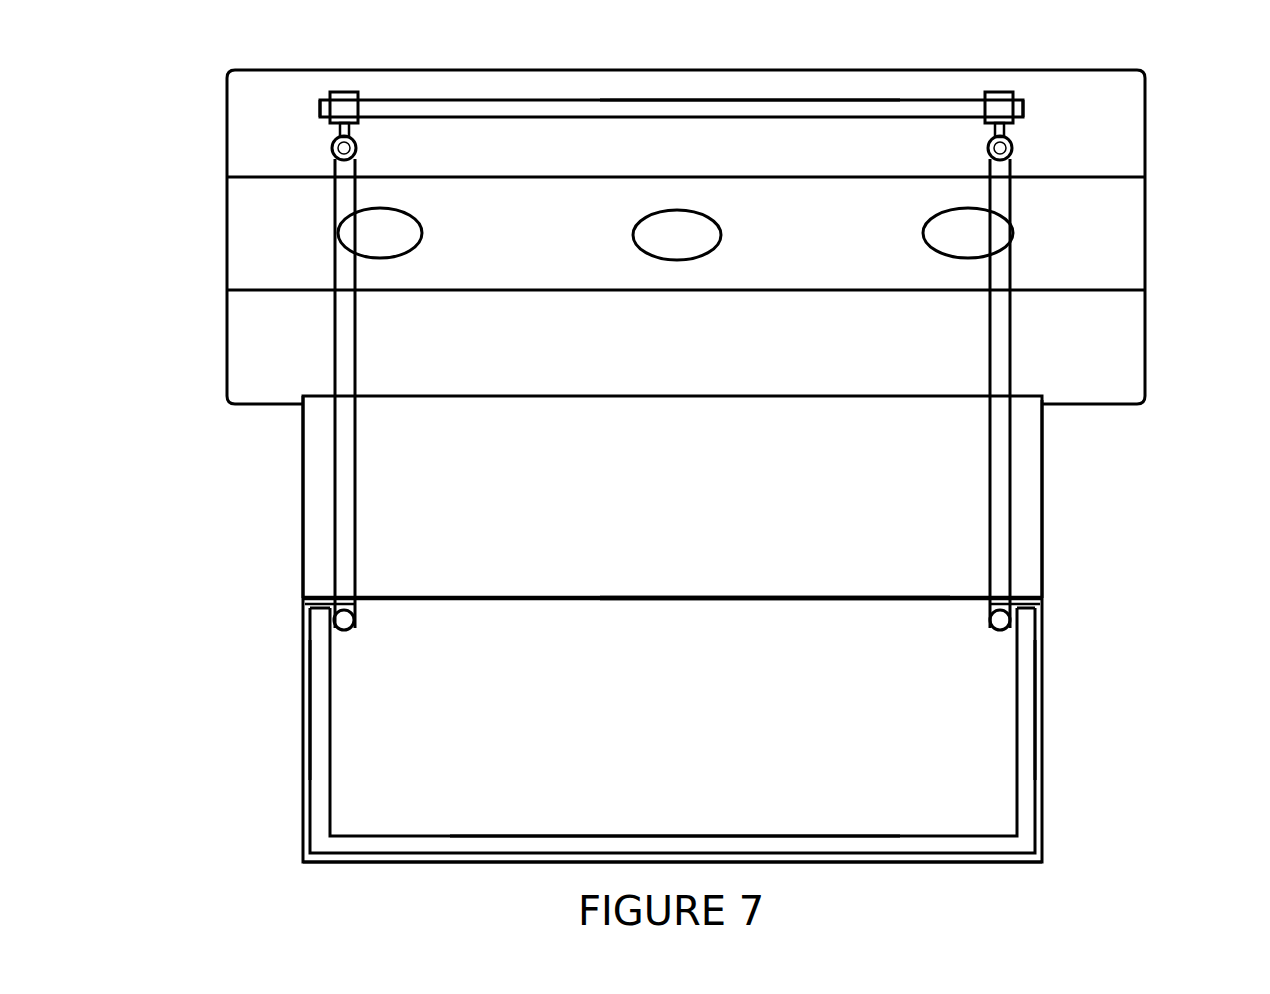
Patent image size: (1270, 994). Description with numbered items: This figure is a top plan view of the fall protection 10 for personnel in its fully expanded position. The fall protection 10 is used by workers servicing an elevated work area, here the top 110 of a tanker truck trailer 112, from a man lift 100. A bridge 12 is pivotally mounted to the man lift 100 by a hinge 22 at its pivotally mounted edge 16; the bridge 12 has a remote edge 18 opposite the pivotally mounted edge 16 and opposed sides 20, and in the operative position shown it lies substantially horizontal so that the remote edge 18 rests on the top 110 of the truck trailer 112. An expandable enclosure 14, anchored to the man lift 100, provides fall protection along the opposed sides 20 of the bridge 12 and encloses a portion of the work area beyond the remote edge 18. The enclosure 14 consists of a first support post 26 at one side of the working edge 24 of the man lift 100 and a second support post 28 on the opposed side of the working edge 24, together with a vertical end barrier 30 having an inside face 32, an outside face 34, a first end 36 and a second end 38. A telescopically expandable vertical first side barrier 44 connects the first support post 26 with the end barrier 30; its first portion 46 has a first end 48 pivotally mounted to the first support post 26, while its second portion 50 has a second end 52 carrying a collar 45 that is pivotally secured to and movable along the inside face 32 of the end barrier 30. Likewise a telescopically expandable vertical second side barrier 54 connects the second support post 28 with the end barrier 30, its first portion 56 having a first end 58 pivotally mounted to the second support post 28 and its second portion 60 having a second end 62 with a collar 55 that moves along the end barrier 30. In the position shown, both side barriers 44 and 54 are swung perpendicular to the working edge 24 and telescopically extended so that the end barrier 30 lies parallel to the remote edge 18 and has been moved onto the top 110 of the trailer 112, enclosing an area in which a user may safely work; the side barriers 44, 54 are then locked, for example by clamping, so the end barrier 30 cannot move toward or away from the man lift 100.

The fall protection 10 is at (1078, 820).
The bridge 12 is at (303, 420).
The expandable enclosure 14 is at (1012, 333).
The pivotally mounted edge 16 is at (922, 597).
The remote edge 18 is at (327, 395).
The opposed sides 20 is at (303, 497).
The hinge 22 is at (302, 597).
The working edge 24 is at (443, 600).
The first support post 26 is at (345, 628).
The second support post 28 is at (1000, 630).
The end barrier 30 is at (470, 100).
The inside face 32 is at (1010, 157).
The outside face 34 is at (867, 100).
The first end 36 is at (318, 110).
The second end 38 is at (1023, 109).
The first side barrier 44 is at (340, 446).
The collar 45 is at (345, 92).
The first portion 46 is at (305, 605).
The first end 48 is at (315, 612).
The second portion 50 is at (335, 194).
The second end 52 is at (335, 160).
The second side barrier 54 is at (1007, 475).
The collar 55 is at (997, 92).
The first portion 56 is at (1015, 590).
The first end 58 is at (1017, 608).
The second portion 60 is at (1012, 193).
The second end 62 is at (1003, 152).
The man lift 100 is at (367, 780).
The top 110 is at (1078, 262).
The tanker truck trailer 112 is at (227, 78).